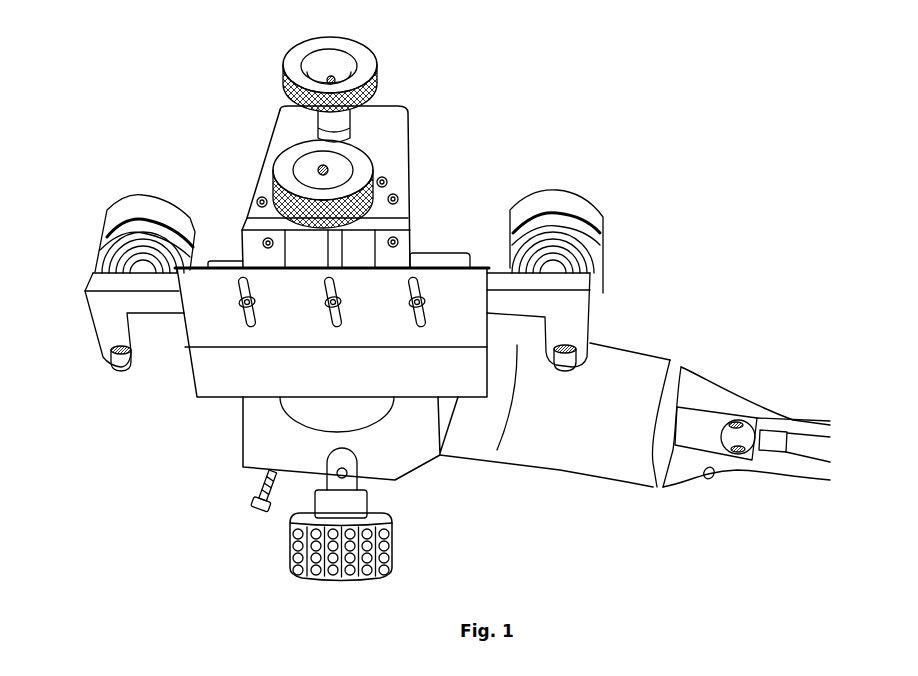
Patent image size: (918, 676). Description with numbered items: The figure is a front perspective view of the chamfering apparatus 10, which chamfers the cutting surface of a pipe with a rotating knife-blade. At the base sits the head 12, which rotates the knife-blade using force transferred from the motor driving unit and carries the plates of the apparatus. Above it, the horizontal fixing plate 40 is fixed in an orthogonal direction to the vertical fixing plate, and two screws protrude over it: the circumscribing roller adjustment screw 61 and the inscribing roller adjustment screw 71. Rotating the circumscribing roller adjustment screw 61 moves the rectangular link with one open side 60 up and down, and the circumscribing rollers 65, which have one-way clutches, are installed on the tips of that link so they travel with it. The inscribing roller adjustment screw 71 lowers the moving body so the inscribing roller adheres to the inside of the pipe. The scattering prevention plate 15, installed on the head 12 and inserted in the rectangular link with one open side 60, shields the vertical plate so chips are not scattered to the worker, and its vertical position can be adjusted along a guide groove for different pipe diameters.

The chamfering apparatus 10 is at (603, 400).
The head 12 is at (272, 435).
The scattering prevention plate 15 is at (217, 367).
The horizontal fixing plate 40 is at (277, 123).
The rectangular link with one open side 60 is at (503, 298).
The circumscribing roller adjustment screw 61 is at (303, 170).
The circumscribing rollers 65 is at (118, 248).
The inscribing roller adjustment screw 71 is at (365, 60).